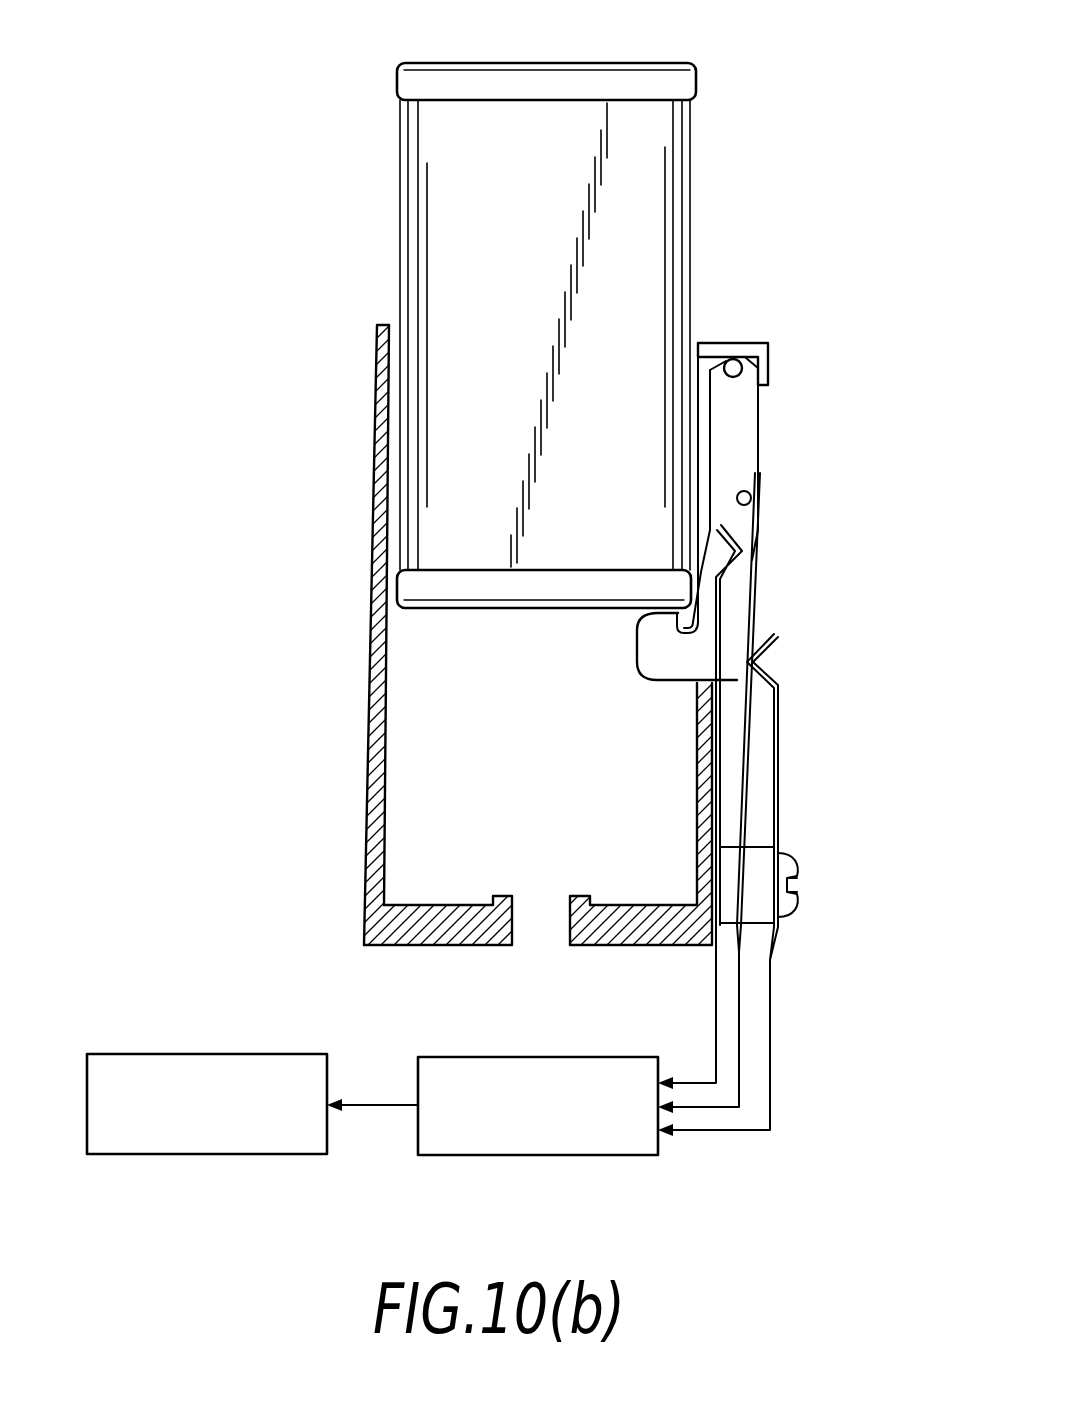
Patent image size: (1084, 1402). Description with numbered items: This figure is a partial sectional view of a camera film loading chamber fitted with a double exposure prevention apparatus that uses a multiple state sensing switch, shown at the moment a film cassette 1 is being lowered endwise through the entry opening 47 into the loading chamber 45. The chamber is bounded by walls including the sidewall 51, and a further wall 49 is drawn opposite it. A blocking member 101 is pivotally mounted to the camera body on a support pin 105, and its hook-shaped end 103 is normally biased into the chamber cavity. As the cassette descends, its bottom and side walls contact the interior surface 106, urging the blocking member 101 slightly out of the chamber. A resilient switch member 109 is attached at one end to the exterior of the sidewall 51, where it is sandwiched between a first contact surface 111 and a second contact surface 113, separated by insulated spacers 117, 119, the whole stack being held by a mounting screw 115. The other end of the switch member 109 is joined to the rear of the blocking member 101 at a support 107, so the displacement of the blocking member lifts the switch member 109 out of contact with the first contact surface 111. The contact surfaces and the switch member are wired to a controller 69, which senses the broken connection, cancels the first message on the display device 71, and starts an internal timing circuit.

The film cassette 1 is at (487, 62).
The loading chamber 45 is at (494, 842).
The entry opening 47 is at (394, 326).
The holder side wall 49 is at (708, 712).
The sidewall 51 is at (712, 822).
The controller 69 is at (447, 1055).
The display device 71 is at (207, 1052).
The blocking member 101 is at (758, 405).
The hook-shaped end 103 is at (665, 643).
The support pin 105 is at (733, 358).
The interior surface 106 is at (372, 846).
The support 107 is at (744, 498).
The switch member 109 is at (755, 587).
The first contact surface 111 is at (720, 753).
The second contact surface 113 is at (777, 708).
The mounting screw 115 is at (797, 867).
The insulated spacer 117 is at (714, 958).
The insulated spacer 119 is at (773, 958).